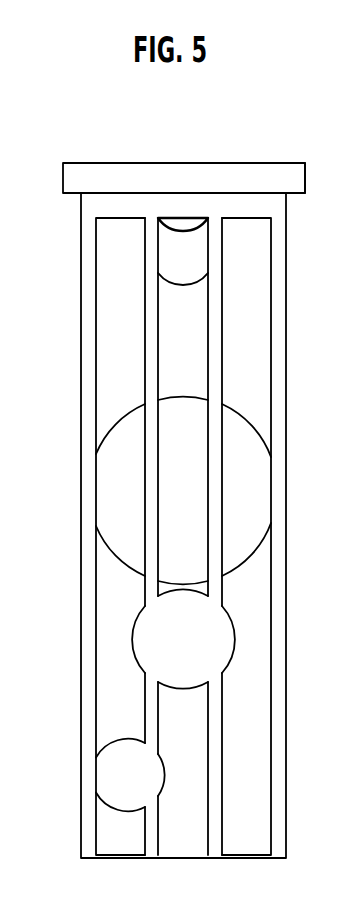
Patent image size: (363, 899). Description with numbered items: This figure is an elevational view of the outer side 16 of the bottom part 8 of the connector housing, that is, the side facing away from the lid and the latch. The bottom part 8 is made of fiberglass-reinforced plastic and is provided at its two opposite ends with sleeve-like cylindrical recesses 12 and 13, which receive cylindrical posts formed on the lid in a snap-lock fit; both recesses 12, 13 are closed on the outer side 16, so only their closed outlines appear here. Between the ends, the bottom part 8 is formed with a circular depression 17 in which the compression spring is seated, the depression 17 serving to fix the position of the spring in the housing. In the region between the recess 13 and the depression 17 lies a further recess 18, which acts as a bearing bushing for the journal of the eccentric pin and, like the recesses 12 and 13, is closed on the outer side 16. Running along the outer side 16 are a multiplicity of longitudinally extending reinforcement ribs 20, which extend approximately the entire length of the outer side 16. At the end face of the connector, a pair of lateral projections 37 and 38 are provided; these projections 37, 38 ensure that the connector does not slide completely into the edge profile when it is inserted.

The bottom part 8 is at (72, 592).
The cylindrical recess 12 is at (182, 237).
The cylindrical recess 13 is at (127, 772).
The outer side 16 is at (118, 381).
The circular depression 17 is at (123, 486).
The recess 18 is at (173, 643).
The reinforcement ribs 20 is at (217, 337).
The lateral projection 37 is at (293, 180).
The lateral projection 38 is at (68, 177).